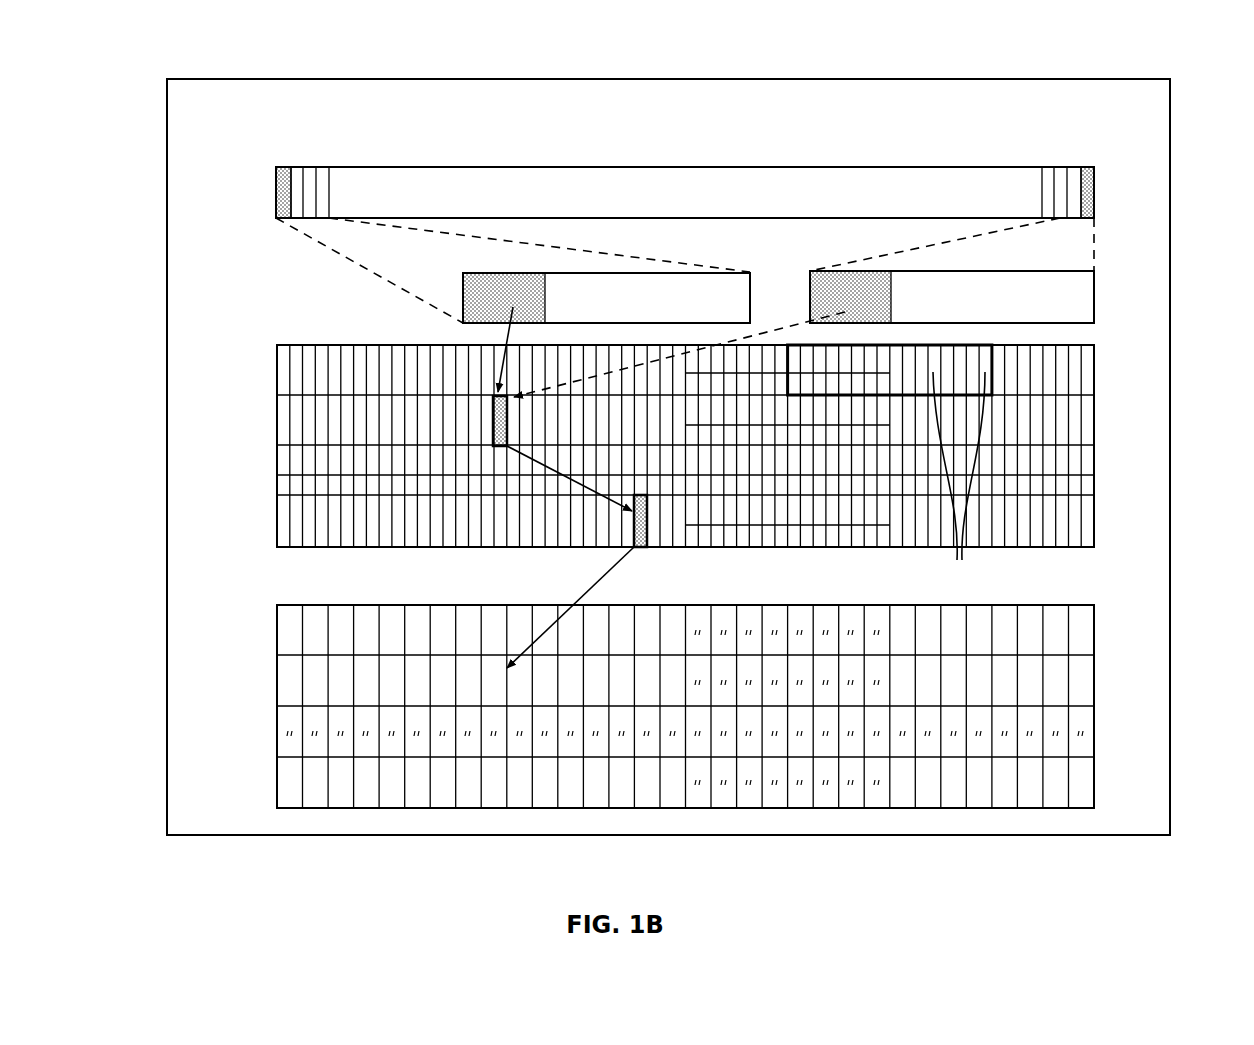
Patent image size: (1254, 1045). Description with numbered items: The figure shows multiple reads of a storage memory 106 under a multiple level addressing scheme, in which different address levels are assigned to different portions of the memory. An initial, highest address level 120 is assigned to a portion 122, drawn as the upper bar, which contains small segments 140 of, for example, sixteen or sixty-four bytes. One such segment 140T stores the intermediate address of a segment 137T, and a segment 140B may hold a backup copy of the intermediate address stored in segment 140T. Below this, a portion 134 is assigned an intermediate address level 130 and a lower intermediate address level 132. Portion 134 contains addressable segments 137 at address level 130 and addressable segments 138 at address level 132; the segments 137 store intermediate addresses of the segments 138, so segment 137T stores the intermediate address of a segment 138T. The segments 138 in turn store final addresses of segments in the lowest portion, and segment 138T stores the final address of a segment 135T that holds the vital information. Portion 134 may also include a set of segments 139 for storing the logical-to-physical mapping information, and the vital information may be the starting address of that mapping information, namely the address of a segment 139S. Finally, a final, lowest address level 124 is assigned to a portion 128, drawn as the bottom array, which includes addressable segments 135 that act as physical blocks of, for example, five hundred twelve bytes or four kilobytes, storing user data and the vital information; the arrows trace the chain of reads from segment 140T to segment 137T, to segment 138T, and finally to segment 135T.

The storage memory 106 is at (330, 79).
The initial address level 120 is at (276, 190).
The portion of storage memory at initial address level 122 is at (1117, 210).
The final address level 124 is at (277, 705).
The portion of storage memory at final address level 128 is at (1115, 698).
The intermediate address level 130 is at (277, 383).
The intermediate address level 132 is at (277, 515).
The portion of storage memory at intermediate address levels 134 is at (1115, 432).
The addressable segment 135 is at (340, 620).
The segment storing vital information 135T is at (490, 672).
The addressable segment at intermediate address level 130 137 is at (297, 420).
The segment storing intermediate address of segment 138T 137T is at (493, 417).
The addressable segment at intermediate address level 132 138 is at (817, 517).
The segment storing final address of segment 135T 138T is at (640, 548).
The segments for L2P mapping information 139 is at (959, 481).
The segment at starting address of L2P mapping information 139S is at (793, 358).
The segment 140 is at (326, 170).
The segment storing intermediate address of segment 137T 140T is at (285, 168).
The backup segment 140B is at (1086, 170).